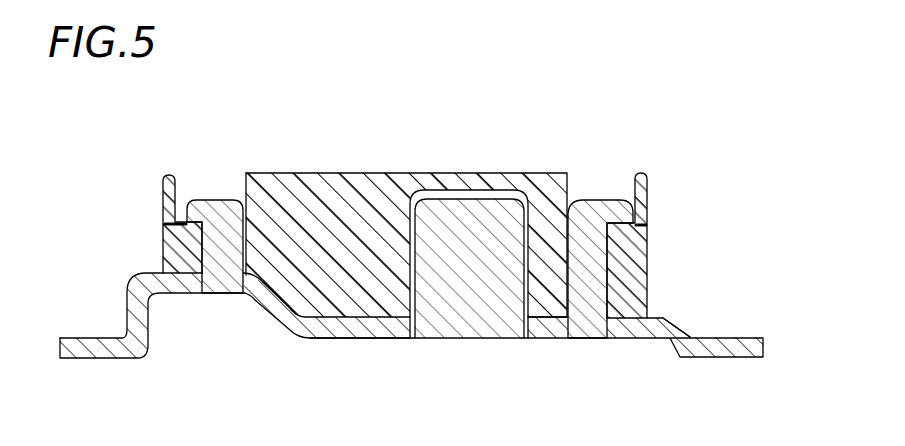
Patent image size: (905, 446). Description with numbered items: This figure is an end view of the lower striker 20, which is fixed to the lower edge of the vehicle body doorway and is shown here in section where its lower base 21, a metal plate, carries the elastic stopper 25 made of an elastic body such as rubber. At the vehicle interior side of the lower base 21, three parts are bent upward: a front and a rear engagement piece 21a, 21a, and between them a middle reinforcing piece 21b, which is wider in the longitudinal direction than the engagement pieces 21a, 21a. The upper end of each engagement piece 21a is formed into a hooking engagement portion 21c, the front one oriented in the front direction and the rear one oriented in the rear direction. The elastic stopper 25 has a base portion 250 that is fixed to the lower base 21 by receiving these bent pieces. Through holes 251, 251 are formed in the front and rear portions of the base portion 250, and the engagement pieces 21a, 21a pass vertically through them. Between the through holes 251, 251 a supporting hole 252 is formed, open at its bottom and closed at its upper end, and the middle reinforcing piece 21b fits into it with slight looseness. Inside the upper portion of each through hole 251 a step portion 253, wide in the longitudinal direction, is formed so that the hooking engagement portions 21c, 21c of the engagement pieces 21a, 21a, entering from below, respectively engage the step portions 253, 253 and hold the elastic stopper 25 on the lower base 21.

The lower striker 20 is at (452, 223).
The lower base 21 is at (742, 337).
The engagement piece 21a is at (262, 267).
The middle reinforcing piece 21b is at (399, 308).
The hooking engagement portion 21c is at (452, 223).
The elastic stopper 25 is at (652, 191).
The base portion 250 is at (283, 173).
The through hole 251 is at (181, 191).
The supporting hole 252 is at (505, 308).
The step portion 253 is at (183, 222).